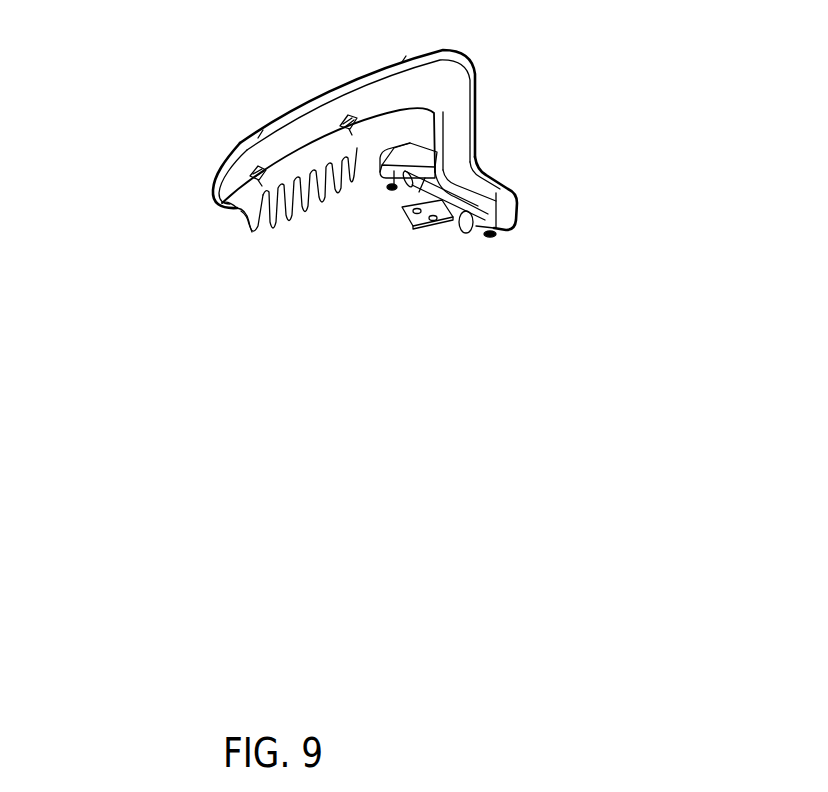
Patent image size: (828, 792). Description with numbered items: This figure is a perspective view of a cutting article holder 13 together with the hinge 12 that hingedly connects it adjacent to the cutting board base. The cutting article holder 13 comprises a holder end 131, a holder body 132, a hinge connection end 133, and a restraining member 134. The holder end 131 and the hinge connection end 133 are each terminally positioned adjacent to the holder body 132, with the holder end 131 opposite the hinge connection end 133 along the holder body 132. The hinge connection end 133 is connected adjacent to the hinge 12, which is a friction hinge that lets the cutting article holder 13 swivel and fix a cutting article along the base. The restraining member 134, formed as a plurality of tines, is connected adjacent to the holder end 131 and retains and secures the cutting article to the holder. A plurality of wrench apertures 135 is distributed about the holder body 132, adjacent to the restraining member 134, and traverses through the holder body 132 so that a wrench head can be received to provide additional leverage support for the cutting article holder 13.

The hinge 12 is at (450, 222).
The cutting article holder 13 is at (372, 258).
The holder end 131 is at (209, 223).
The holder body 132 is at (488, 54).
The hinge connection end 133 is at (523, 184).
The restraining member 134 is at (317, 236).
The wrench apertures 135 is at (258, 181).